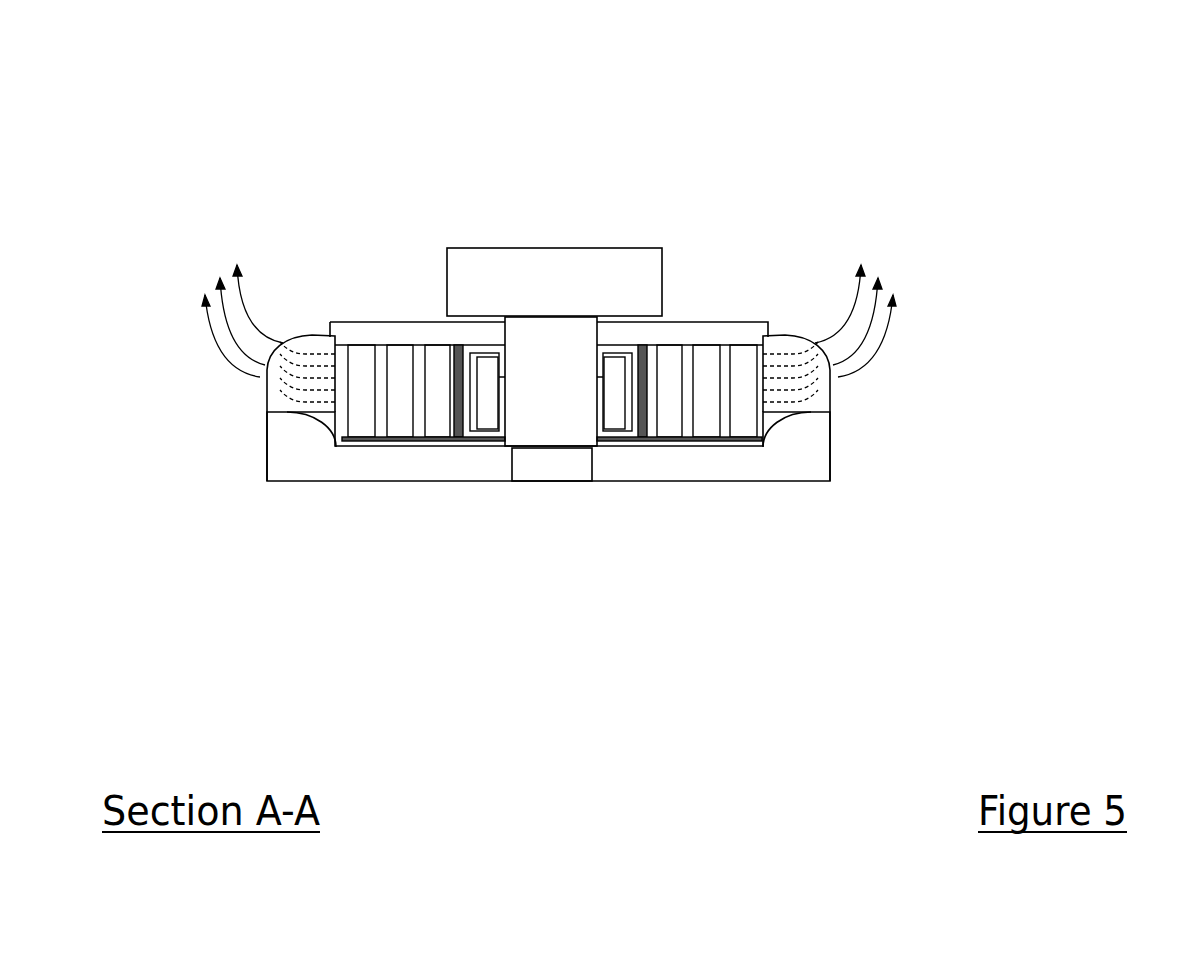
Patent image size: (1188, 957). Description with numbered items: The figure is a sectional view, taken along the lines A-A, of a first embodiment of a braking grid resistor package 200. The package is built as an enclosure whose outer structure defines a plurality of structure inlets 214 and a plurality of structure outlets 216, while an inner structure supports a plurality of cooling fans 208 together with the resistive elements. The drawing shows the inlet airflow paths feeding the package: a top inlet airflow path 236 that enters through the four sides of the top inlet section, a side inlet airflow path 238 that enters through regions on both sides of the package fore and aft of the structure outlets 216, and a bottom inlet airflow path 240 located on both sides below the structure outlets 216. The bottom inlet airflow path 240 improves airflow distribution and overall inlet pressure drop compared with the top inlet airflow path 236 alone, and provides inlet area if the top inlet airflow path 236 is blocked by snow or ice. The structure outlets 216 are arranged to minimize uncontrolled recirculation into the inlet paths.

The braking grid resistor package 200 is at (646, 259).
The cooling fans 208 is at (553, 441).
The structure inlets 214 is at (585, 398).
The structure outlets 216 is at (553, 377).
The top inlet airflow path 236 is at (438, 316).
The side inlet airflow path 238 is at (497, 403).
The bottom inlet airflow path 240 is at (524, 480).